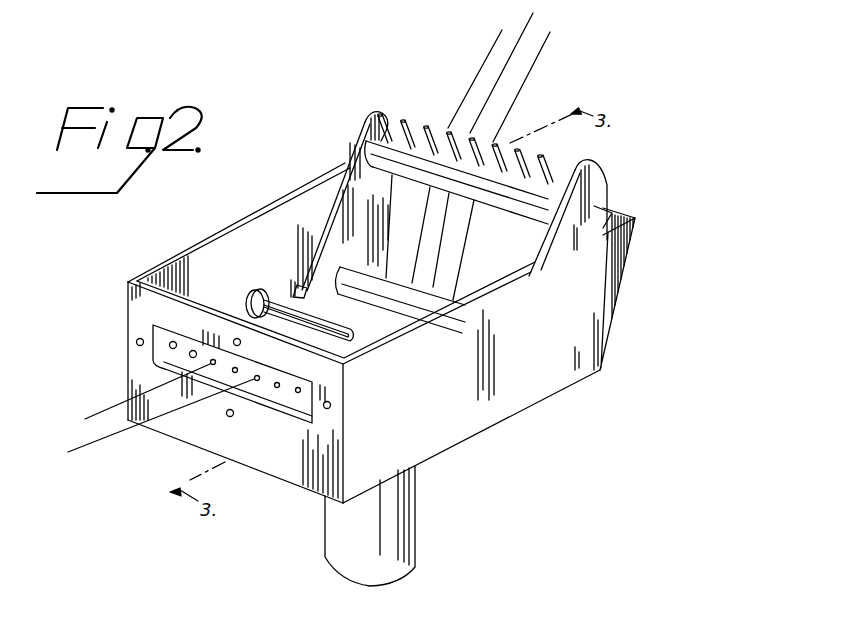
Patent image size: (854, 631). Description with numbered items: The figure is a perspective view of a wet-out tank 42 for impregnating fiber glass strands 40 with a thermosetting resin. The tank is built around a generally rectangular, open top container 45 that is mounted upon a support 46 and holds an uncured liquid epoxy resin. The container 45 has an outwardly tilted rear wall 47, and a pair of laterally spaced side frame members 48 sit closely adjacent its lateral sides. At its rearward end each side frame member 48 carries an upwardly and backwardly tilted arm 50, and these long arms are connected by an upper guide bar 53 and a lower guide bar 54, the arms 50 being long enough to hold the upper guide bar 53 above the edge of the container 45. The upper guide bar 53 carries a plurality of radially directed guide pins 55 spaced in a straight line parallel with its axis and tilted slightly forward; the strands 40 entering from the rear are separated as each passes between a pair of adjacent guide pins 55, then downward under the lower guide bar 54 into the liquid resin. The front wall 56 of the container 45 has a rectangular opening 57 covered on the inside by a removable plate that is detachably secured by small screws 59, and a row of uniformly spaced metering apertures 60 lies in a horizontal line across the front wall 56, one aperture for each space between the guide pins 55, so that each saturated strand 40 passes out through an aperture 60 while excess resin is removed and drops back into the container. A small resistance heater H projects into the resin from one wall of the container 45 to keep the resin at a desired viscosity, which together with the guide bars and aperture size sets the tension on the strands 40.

The strands 40 is at (487, 58).
The wet-out tank 42 is at (600, 372).
The container 45 is at (500, 410).
The support 46 is at (415, 535).
The rear wall 47 is at (623, 287).
The side frame members 48 is at (342, 180).
The tilted arm 50 is at (350, 162).
The upper guide bar 53 is at (513, 208).
The lower guide bar 54 is at (413, 303).
The guide pins 55 is at (432, 118).
The front wall 56 is at (264, 464).
The rectangular opening 57 is at (152, 360).
The screws 59 is at (135, 343).
The metering apertures 60 is at (195, 352).
The resistance heater H is at (302, 287).